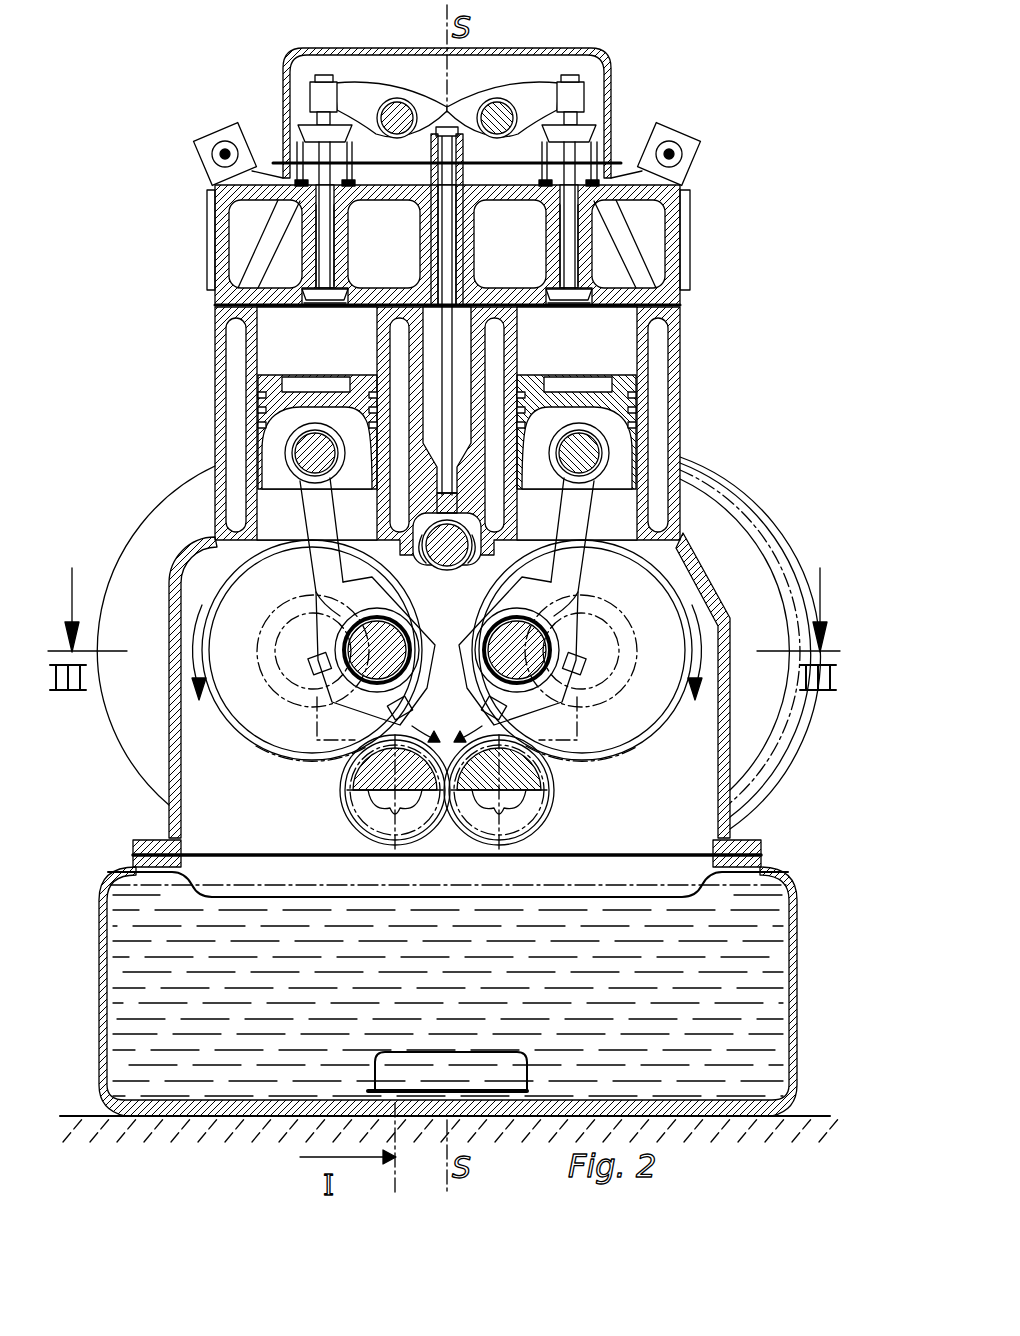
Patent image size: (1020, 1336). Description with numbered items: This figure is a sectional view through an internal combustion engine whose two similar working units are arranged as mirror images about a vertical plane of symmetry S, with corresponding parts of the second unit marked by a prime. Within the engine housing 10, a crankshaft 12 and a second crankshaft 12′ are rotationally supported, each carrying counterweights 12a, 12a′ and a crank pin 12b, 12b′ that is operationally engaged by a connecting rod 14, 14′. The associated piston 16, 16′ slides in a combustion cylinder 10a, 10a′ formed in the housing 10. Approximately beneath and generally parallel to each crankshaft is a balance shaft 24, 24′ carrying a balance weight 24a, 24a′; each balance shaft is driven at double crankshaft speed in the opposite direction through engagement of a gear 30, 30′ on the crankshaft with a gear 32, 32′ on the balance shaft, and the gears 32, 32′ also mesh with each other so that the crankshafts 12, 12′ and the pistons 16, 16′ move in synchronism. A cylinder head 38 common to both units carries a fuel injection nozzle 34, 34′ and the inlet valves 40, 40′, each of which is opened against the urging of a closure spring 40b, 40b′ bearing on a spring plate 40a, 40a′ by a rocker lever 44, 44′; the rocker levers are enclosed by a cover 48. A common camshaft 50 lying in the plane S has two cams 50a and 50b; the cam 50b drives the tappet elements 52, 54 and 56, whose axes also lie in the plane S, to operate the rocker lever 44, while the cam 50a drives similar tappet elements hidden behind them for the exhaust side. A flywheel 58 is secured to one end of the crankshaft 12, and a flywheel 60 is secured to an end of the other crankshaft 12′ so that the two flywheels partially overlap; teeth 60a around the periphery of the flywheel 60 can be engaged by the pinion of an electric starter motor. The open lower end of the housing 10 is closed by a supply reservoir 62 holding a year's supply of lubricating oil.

The engine housing 10 is at (680, 386).
The combustion cylinder 10a is at (240, 350).
The combustion cylinder 10a′ is at (516, 358).
The crankshaft 12 is at (277, 640).
The crankshaft 12′ is at (620, 640).
The counterweight 12a is at (262, 725).
The counterweight 12a′ is at (630, 725).
The crank pin 12b is at (400, 640).
The crank pin 12b′ is at (478, 700).
The connecting rod 14 is at (333, 521).
The connecting rod 14′ is at (558, 521).
The piston 16 is at (265, 384).
The piston 16′ is at (577, 397).
The balance shaft 24 is at (392, 830).
The balance shaft 24′ is at (502, 830).
The balance weight 24a is at (353, 820).
The balance weight 24a′ is at (540, 820).
The gear 30 is at (320, 767).
The gear 30′ is at (580, 767).
The gear 32 is at (350, 823).
The gear 32′ is at (544, 823).
The fuel injection nozzle 34 is at (211, 140).
The fuel injection nozzle 34′ is at (690, 150).
The cylinder head 38 is at (222, 302).
The inlet valve 40 is at (330, 290).
The inlet valve 40′ is at (565, 290).
The spring plate 40a is at (317, 140).
The spring plate 40a′ is at (582, 140).
The closure spring 40b is at (297, 150).
The closure spring 40b′ is at (598, 152).
The rocker lever 44 is at (398, 100).
The rocker lever 44′ is at (497, 100).
The cover 48 is at (611, 130).
The camshaft 50 is at (470, 538).
The cam 50a is at (420, 550).
The cam 50b is at (472, 550).
The tappet element 52 is at (433, 460).
The tappet element 54 is at (443, 392).
The tappet element 56 is at (462, 140).
The flywheel 58 is at (180, 497).
The flywheel 60 is at (694, 520).
The teeth 60a is at (770, 541).
The supply reservoir 62 is at (103, 995).